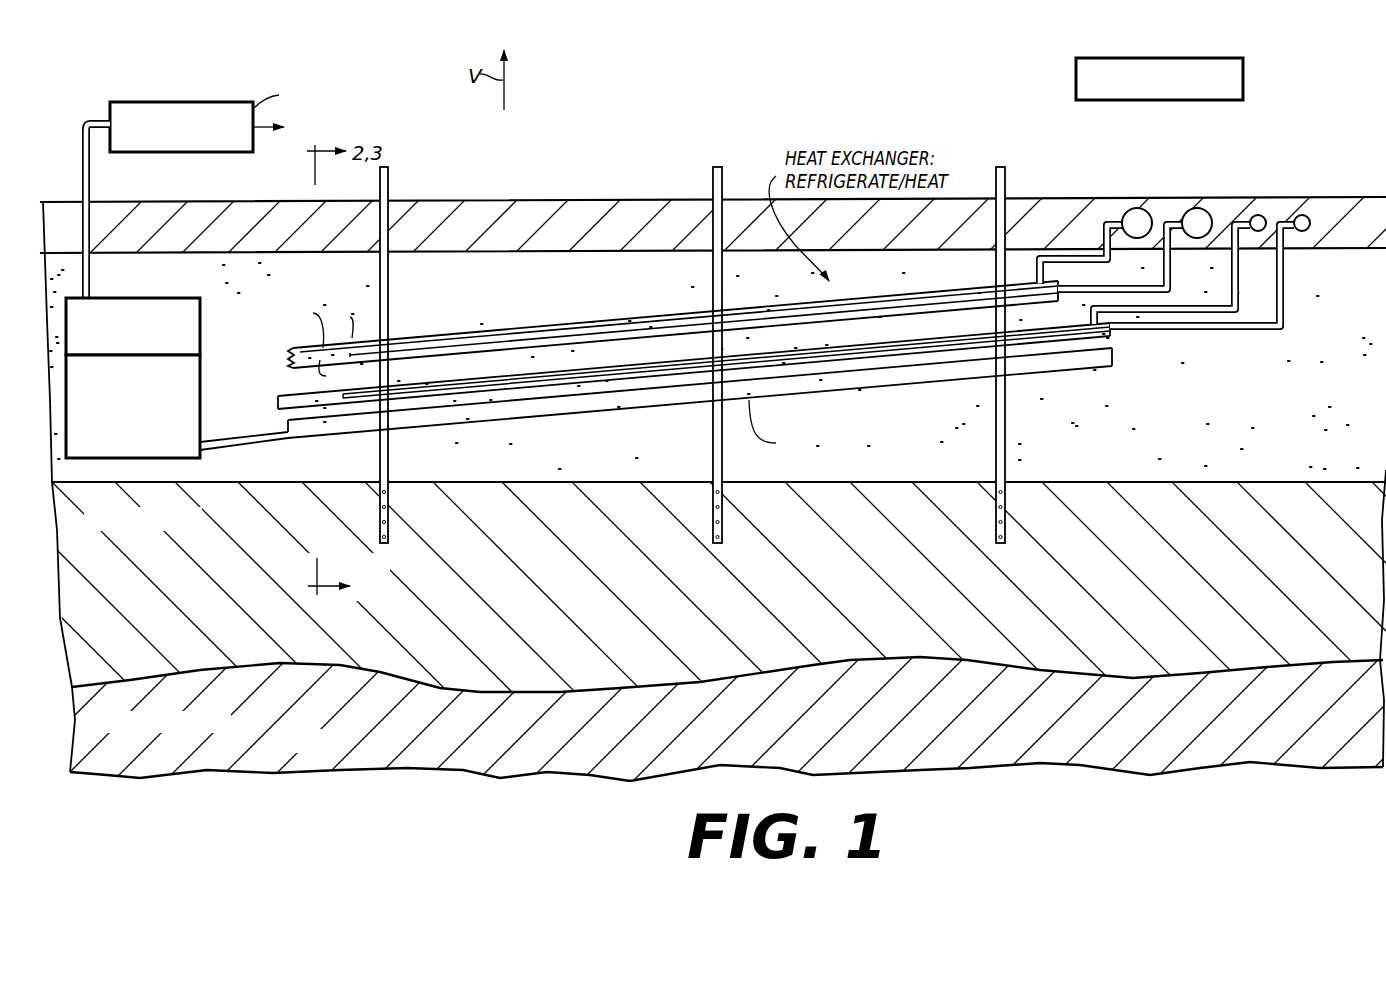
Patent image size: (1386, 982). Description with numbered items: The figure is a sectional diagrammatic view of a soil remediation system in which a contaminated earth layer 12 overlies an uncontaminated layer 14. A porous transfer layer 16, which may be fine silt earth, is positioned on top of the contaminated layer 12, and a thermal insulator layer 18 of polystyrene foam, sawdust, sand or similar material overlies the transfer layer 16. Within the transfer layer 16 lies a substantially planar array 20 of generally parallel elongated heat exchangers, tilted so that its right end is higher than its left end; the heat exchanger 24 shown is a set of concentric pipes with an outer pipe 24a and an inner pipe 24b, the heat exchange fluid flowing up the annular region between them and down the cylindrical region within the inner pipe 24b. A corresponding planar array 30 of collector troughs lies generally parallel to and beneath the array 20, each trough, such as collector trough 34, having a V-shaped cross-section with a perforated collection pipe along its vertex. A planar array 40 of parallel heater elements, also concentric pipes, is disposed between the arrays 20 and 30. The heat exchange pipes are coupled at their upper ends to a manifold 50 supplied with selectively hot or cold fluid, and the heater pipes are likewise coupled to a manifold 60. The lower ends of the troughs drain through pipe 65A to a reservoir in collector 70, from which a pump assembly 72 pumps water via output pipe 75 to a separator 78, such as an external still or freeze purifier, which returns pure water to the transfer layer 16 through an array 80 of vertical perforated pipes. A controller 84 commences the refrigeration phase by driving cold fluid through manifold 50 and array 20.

The contaminated earth layer 12 is at (208, 602).
The uncontaminated layer 14 is at (319, 750).
The porous transfer layer 16 is at (492, 300).
The thermal insulator layer 18 is at (478, 214).
The planar array of heat exchangers 20 is at (279, 354).
The heat exchanger 24 is at (650, 323).
The outer pipe 24a is at (597, 320).
The inner pipe 24b is at (735, 318).
The planar array of collector troughs 30 is at (281, 424).
The collector trough 34 is at (656, 411).
The planar array of heater elements 40 is at (546, 367).
The manifold 50 is at (1103, 180).
The manifold 60 is at (1235, 180).
The pipe 65A is at (246, 447).
The collector 70 is at (192, 386).
The pump assembly 72 is at (179, 312).
The output pipe 75 is at (92, 181).
The separator apparatus 78 is at (171, 96).
The array of perforated pipes 80 is at (998, 163).
The controller 84 is at (1245, 77).